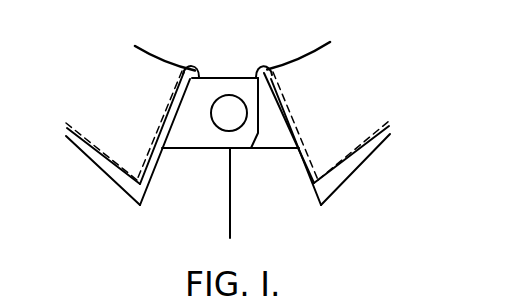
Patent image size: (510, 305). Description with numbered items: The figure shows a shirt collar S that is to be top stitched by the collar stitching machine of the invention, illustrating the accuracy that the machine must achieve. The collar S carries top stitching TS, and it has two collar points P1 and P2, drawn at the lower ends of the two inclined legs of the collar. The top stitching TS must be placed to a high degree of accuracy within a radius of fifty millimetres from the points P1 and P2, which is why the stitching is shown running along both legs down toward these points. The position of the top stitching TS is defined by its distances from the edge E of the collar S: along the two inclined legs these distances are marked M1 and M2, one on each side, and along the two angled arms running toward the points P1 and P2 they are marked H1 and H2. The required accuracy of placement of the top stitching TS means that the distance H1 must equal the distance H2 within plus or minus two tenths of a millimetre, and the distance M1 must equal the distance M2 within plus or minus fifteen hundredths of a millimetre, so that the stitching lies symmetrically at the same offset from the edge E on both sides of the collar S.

The shirt collar S is at (152, 65).
The distance of top stitching from collar edge M2 is at (193, 126).
The distance of top stitching from collar edge M1 is at (265, 122).
The distance of top stitching from collar edge H2 is at (115, 125).
The distance of top stitching from collar edge H1 is at (333, 137).
The edge of the collar E is at (150, 160).
The top stitching TS is at (128, 178).
The collar point P2 is at (139, 214).
The collar point P1 is at (320, 214).